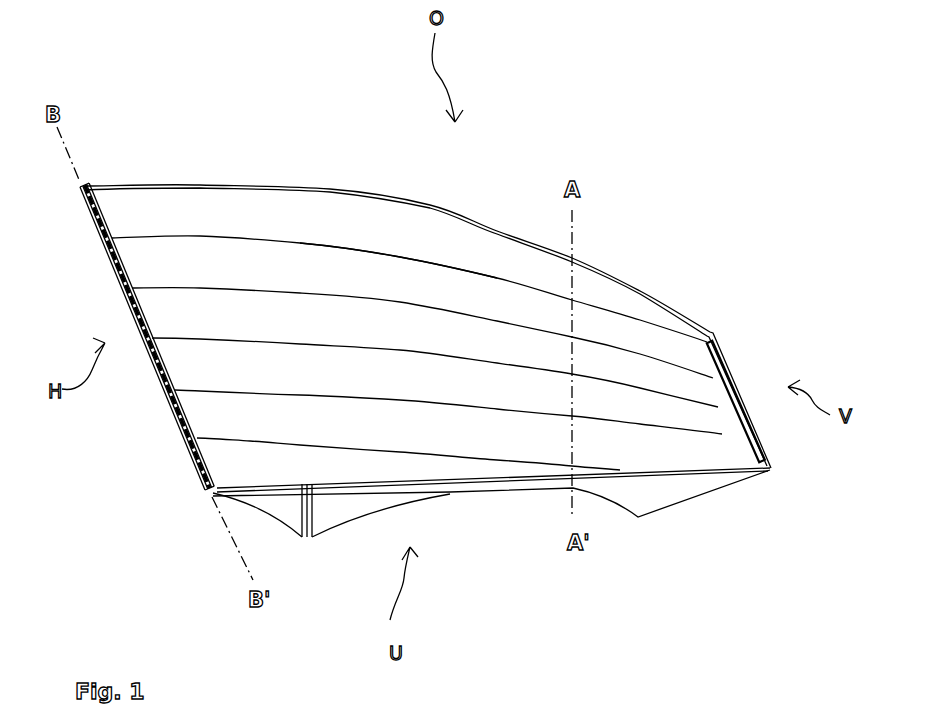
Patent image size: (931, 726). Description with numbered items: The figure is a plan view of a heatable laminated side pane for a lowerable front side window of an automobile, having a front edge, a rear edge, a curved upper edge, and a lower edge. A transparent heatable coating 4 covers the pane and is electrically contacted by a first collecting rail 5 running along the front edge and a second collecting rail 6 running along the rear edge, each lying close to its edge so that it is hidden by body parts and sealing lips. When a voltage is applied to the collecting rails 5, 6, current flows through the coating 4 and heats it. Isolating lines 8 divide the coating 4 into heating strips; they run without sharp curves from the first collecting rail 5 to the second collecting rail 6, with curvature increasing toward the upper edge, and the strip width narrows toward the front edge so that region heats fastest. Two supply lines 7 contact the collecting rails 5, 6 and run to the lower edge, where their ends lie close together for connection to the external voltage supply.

The heatable coating 4 is at (263, 200).
The first collecting rail 5 is at (718, 365).
The second collecting rail 6 is at (117, 275).
The supply line 7 is at (255, 486).
The isolating line 8 is at (418, 260).